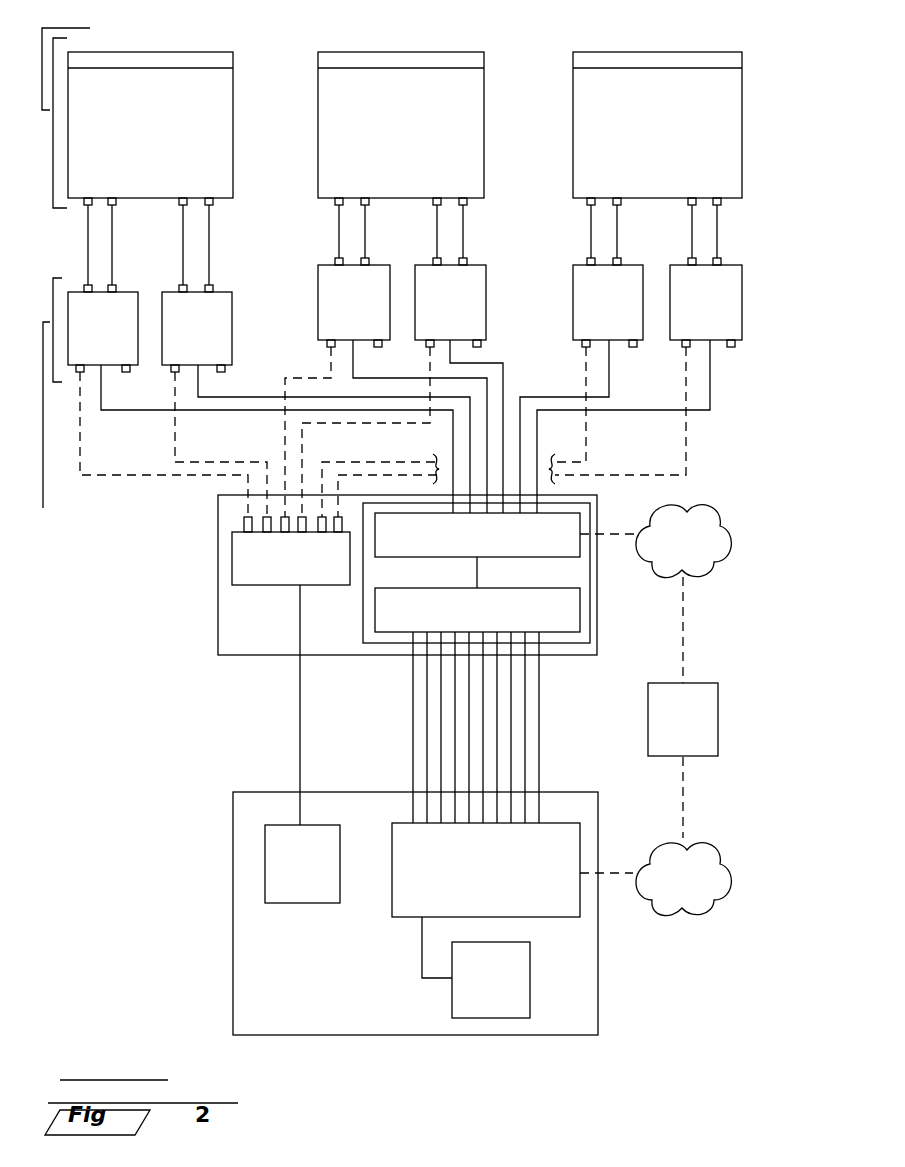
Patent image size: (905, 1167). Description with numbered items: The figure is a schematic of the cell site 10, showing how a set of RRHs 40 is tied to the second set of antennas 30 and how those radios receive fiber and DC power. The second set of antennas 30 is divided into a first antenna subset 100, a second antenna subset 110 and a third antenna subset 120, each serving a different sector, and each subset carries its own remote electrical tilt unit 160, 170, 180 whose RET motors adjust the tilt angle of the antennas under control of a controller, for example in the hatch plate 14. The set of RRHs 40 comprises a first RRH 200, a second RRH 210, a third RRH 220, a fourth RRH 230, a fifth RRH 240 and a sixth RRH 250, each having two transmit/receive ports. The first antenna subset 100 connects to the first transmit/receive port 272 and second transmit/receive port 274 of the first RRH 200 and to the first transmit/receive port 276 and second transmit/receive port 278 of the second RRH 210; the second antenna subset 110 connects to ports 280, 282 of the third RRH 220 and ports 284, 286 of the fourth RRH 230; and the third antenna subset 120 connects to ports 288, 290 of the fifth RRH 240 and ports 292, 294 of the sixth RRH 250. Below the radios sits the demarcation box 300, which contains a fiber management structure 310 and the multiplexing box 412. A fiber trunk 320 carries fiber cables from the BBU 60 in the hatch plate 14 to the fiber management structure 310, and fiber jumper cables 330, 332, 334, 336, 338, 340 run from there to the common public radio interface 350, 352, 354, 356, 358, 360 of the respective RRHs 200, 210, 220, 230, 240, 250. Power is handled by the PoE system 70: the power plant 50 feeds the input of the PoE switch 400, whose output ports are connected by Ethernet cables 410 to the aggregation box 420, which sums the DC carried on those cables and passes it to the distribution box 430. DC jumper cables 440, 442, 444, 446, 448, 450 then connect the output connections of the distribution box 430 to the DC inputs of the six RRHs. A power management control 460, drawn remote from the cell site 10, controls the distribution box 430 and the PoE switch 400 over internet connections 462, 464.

The cell site 10 is at (88, 843).
The hatch plate 14 is at (598, 953).
The second set of antennas 30 is at (82, 200).
The set of RRHs 40 is at (40, 428).
The power plant 50 is at (505, 993).
The BBU 60 is at (316, 876).
The PoE system 70 is at (704, 672).
The first antenna subset 100 is at (160, 136).
The second antenna subset 110 is at (417, 136).
The third antenna subset 120 is at (670, 136).
The remote electrical tilt unit 160 is at (182, 57).
The remote electrical tilt unit 170 is at (420, 57).
The remote electrical tilt unit 180 is at (637, 57).
The first RRH 200 is at (122, 341).
The second RRH 210 is at (216, 341).
The third RRH 220 is at (374, 313).
The fourth RRH 230 is at (470, 313).
The fifth RRH 240 is at (628, 313).
The sixth RRH 250 is at (726, 313).
The first transmit/receive port 272 is at (77, 283).
The second transmit/receive port 274 is at (116, 283).
The first transmit/receive port 276 is at (178, 286).
The second transmit/receive port 278 is at (280, 250).
The first transmit/receive port 280 is at (326, 254).
The second transmit/receive port 282 is at (370, 254).
The first transmit/receive port 284 is at (430, 258).
The second transmit/receive port 286 is at (468, 254).
The first transmit/receive port 288 is at (584, 254).
The second transmit/receive port 290 is at (620, 254).
The first transmit/receive port 292 is at (685, 258).
The second transmit/receive port 294 is at (725, 254).
The demarcation box 300 is at (222, 678).
The fiber management structure 310 is at (312, 574).
The fiber trunk 320 is at (300, 727).
The fiber jumper cable 330 is at (125, 478).
The fiber jumper cable 332 is at (195, 464).
The fiber jumper cable 334 is at (292, 432).
The fiber jumper cable 336 is at (318, 425).
The fiber jumper cable 338 is at (588, 444).
The fiber jumper cable 340 is at (663, 474).
The common public radio interface 350 is at (73, 381).
The common public radio interface 352 is at (172, 382).
The common public radio interface 354 is at (329, 372).
The common public radio interface 356 is at (446, 348).
The common public radio interface 358 is at (578, 345).
The common public radio interface 360 is at (676, 346).
The PoE switch 400 is at (502, 882).
The Ethernet cables 410 is at (592, 705).
The multiplexing box 412 is at (590, 568).
The aggregation box 420 is at (497, 625).
The distribution box 430 is at (497, 550).
The DC jumper cable 440 is at (102, 402).
The DC jumper cable 442 is at (257, 393).
The DC jumper cable 444 is at (356, 377).
The DC jumper cable 446 is at (503, 363).
The DC jumper cable 448 is at (575, 396).
The DC jumper cable 450 is at (712, 380).
The power management control 460 is at (703, 732).
The internet connection 462 is at (701, 554).
The internet connection 464 is at (701, 892).